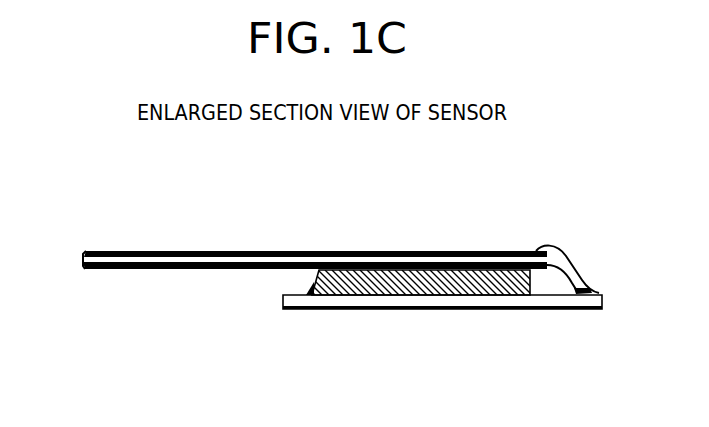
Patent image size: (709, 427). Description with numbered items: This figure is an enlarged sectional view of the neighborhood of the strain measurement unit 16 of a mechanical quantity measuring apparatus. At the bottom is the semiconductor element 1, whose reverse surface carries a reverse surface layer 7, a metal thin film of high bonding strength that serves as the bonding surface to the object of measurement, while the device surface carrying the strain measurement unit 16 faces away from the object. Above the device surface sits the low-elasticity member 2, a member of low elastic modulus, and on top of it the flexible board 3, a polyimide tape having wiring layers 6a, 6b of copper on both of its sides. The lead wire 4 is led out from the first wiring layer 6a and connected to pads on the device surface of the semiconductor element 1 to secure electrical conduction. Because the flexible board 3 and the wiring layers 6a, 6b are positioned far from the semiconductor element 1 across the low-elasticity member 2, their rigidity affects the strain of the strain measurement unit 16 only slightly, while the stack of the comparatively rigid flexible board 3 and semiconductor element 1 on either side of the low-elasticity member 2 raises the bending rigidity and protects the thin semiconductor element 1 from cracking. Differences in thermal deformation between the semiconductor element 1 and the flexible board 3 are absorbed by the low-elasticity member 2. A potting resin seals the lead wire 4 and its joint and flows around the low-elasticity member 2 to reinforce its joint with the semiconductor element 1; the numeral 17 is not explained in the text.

The semiconductor element 1 is at (330, 297).
The low-elasticity member 2 is at (372, 272).
The flexible board 3 is at (142, 252).
The lead wire 4 is at (577, 270).
The first wiring layer 6a is at (273, 252).
The wiring layer 6b is at (222, 252).
The reverse surface layer 7 is at (563, 311).
The strain measurement unit 16 is at (437, 297).
The base plate 17 is at (468, 309).